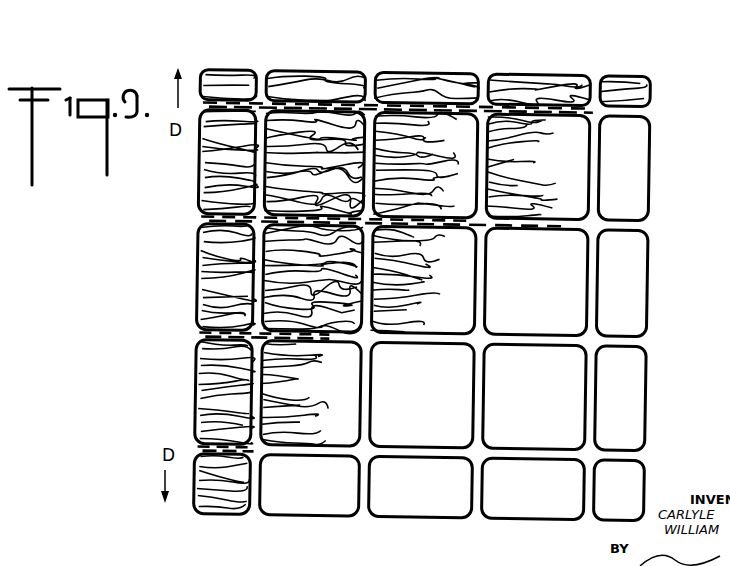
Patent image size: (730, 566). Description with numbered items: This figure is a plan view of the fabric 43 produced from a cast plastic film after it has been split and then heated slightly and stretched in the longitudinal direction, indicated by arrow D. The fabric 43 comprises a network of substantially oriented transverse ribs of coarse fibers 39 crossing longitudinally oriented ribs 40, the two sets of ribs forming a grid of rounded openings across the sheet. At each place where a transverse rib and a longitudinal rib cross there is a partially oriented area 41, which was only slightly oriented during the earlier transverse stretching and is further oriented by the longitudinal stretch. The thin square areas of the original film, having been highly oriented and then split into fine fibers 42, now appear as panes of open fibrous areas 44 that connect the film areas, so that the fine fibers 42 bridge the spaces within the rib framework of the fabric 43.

The transverse ribs 39 is at (551, 344).
The longitudinal ribs 40 is at (262, 76).
The square areas at intersections 41 is at (597, 230).
The fine fibers 42 is at (200, 283).
The fabric 43 is at (636, 159).
The fibrous areas 44 is at (442, 212).